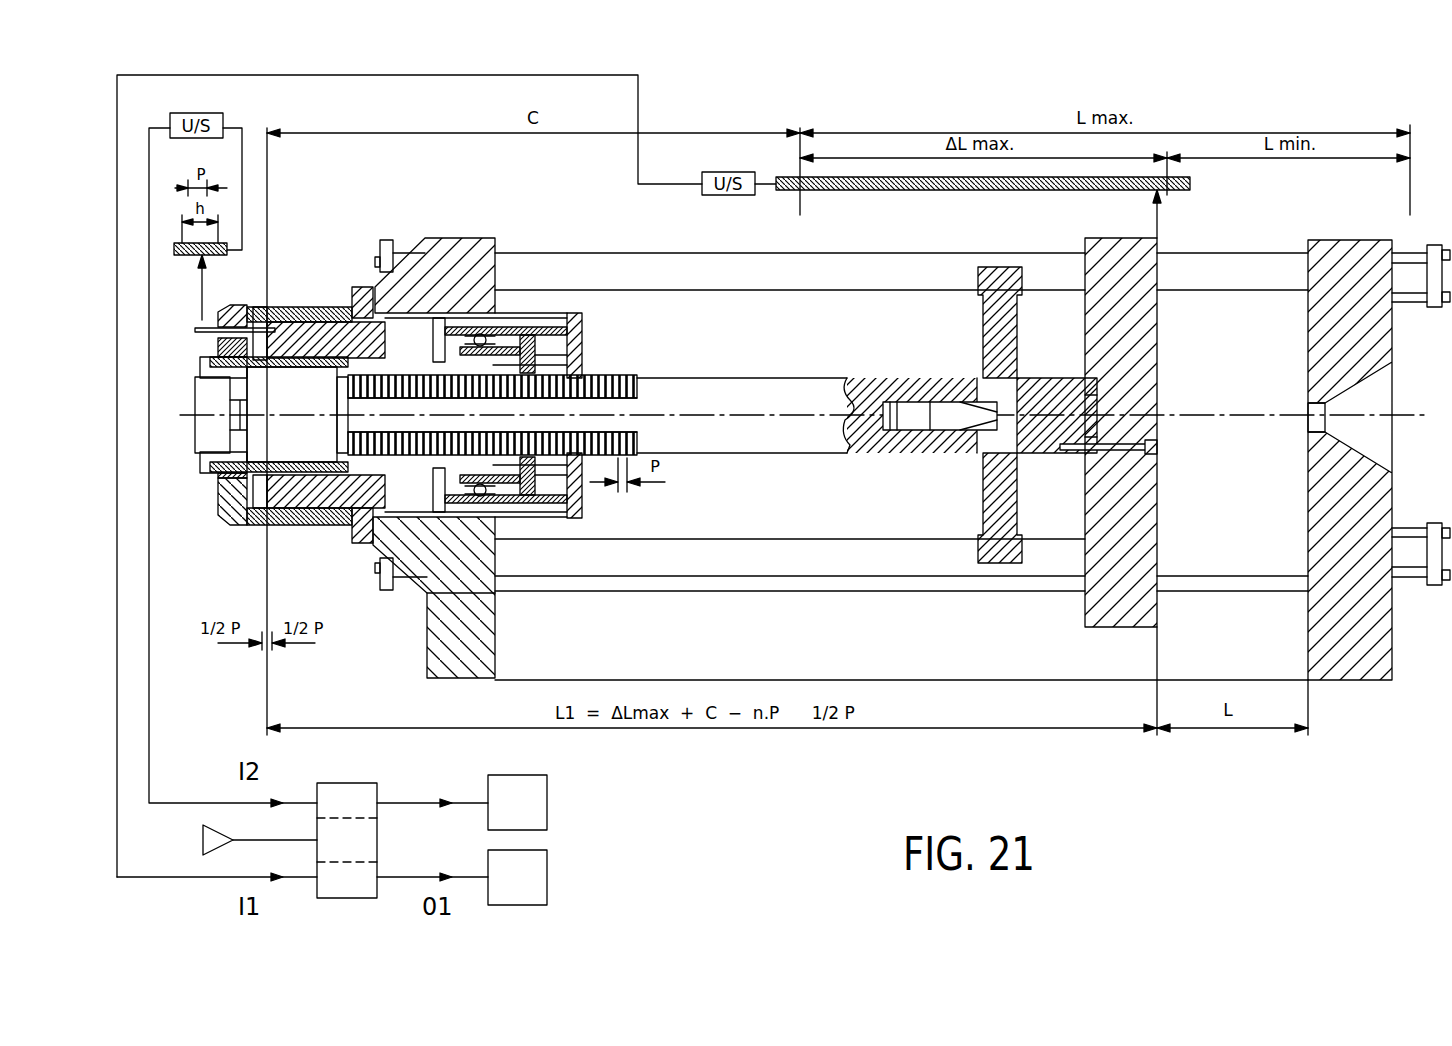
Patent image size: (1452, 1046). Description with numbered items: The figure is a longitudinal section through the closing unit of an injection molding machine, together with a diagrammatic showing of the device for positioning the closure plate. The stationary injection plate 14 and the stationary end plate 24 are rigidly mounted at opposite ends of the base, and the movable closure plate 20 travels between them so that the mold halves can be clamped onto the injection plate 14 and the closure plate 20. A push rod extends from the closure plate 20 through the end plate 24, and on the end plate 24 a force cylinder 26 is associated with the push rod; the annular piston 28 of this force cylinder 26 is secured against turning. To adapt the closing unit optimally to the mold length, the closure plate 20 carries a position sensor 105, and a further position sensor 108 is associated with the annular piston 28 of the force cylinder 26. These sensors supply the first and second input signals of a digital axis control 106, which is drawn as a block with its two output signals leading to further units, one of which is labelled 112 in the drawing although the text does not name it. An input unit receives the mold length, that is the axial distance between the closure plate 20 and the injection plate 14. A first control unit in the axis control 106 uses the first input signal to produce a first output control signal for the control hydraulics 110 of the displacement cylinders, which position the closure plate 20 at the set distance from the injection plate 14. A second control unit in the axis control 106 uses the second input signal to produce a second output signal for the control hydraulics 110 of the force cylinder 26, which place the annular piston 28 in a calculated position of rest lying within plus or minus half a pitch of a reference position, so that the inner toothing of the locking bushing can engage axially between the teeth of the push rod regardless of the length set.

The injection plate 14 is at (1355, 668).
The closure plate 20 is at (1095, 614).
The end plate 24 is at (495, 645).
The force cylinder 26 is at (225, 532).
The annular piston 28 is at (300, 500).
The position sensor 105 is at (1196, 205).
The digital axis control 106 is at (358, 776).
The position sensor 108 is at (290, 222).
The control hydraulics 110 is at (204, 840).
The display 112 is at (547, 805).